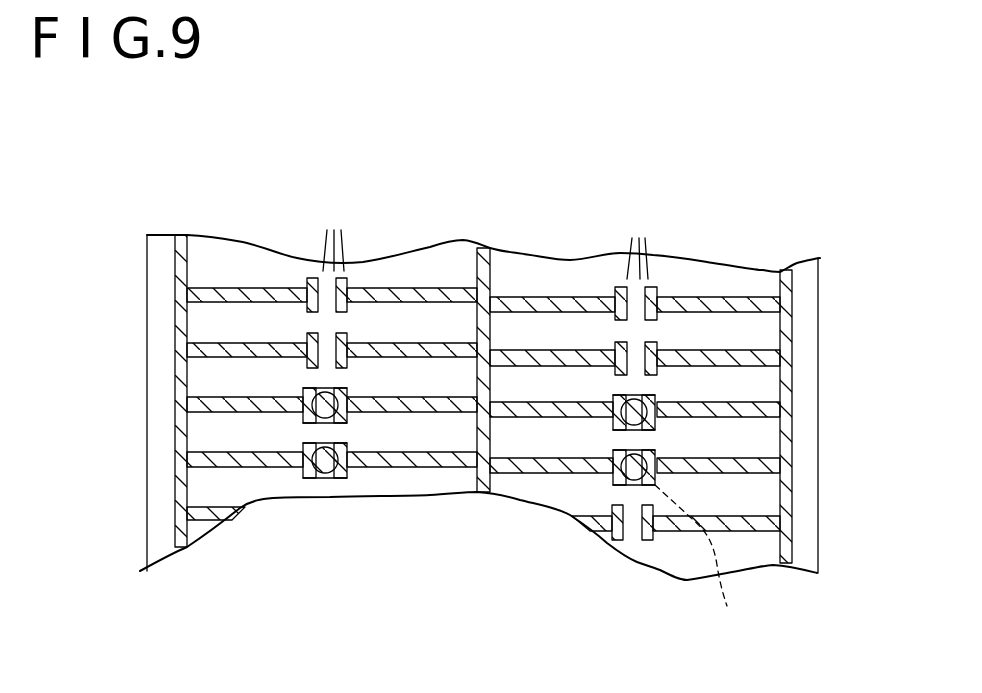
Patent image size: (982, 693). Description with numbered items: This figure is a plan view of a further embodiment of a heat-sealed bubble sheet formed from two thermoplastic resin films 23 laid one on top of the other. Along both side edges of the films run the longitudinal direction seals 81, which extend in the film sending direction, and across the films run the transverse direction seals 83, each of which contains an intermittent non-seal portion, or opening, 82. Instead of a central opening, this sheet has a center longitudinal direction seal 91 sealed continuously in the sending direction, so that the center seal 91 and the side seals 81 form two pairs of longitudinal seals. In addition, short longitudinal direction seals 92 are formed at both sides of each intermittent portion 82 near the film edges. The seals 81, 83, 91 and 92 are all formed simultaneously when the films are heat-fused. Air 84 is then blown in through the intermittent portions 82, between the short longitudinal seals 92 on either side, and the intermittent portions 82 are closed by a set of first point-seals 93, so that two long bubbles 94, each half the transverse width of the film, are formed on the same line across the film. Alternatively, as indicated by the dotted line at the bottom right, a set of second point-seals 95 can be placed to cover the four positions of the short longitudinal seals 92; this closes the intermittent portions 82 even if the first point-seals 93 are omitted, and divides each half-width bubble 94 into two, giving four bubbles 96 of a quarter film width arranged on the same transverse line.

The thermoplastic resin film 23 is at (157, 245).
The longitudinal direction seal 81 is at (185, 237).
The intermittent non-seal portion 82 is at (328, 284).
The transverse direction seal 83 is at (270, 290).
The air 84 is at (336, 243).
The center longitudinal direction seal 91 is at (497, 262).
The short longitudinal direction seal 92 is at (308, 282).
The first point-seal 93 is at (347, 414).
The long bubble 94 is at (535, 443).
The second point-seal 95 is at (700, 560).
The bubble 96 is at (755, 494).